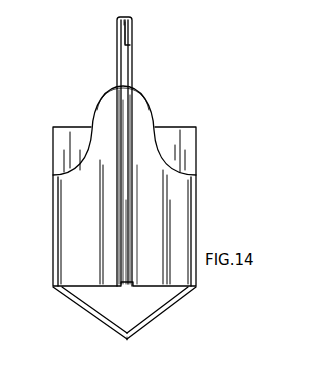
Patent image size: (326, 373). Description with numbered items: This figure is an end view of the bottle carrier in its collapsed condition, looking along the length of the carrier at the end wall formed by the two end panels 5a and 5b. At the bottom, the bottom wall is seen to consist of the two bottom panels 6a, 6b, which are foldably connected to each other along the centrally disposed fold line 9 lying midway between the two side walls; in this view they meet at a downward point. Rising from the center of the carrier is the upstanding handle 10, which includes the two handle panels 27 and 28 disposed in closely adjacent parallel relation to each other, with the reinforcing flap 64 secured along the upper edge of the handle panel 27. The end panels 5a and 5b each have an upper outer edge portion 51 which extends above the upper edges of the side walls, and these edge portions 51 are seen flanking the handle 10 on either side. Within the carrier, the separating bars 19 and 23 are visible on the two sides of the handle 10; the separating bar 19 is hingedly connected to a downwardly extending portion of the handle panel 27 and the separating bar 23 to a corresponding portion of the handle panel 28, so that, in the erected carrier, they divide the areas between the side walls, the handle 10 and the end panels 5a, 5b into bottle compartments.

The fold line 9 is at (155, 355).
The handle 10 is at (128, 15).
The reinforcing flap 64 is at (169, 33).
The handle panel 27 is at (117, 62).
The handle panel 28 is at (132, 53).
The upper outer edge portion 51 is at (102, 104).
The separating bar 19 is at (58, 152).
The separating bar 23 is at (175, 152).
The end panel 5a is at (68, 215).
The end panel 5b is at (177, 197).
The bottom panel 6a is at (82, 310).
The bottom panel 6b is at (165, 313).